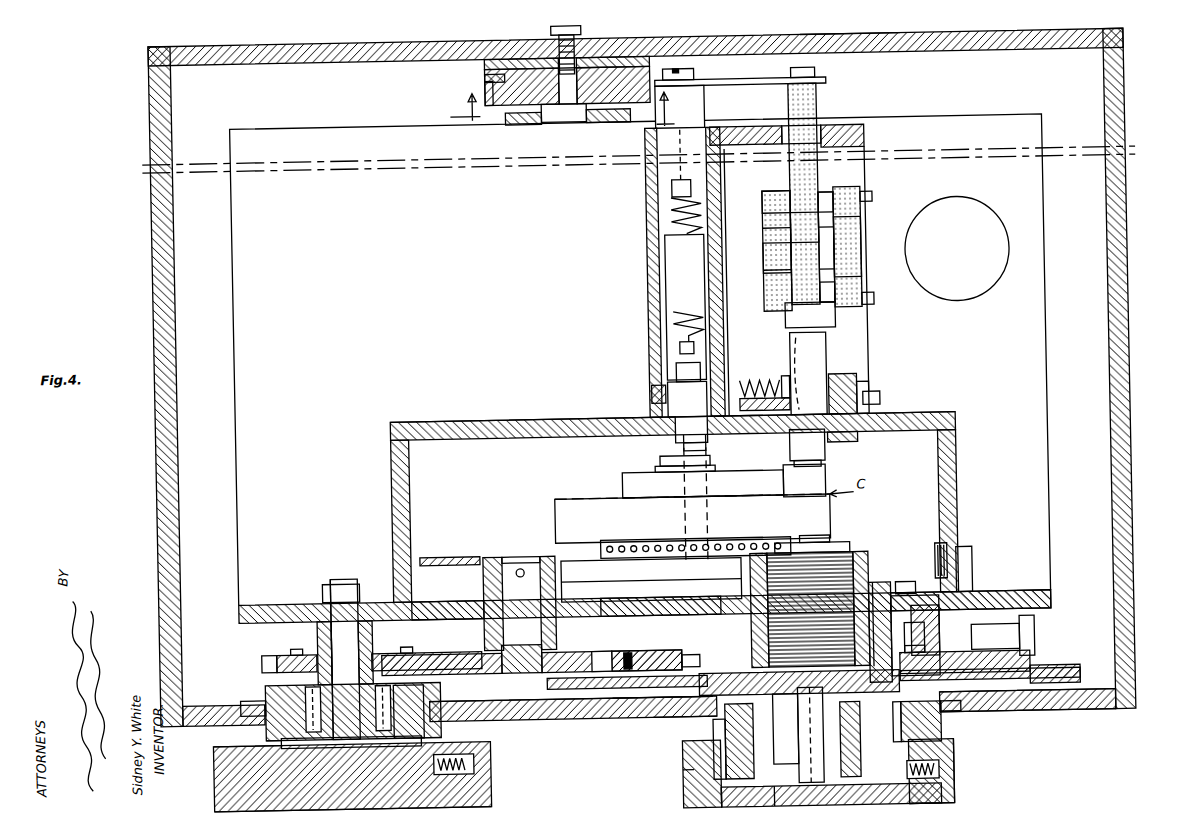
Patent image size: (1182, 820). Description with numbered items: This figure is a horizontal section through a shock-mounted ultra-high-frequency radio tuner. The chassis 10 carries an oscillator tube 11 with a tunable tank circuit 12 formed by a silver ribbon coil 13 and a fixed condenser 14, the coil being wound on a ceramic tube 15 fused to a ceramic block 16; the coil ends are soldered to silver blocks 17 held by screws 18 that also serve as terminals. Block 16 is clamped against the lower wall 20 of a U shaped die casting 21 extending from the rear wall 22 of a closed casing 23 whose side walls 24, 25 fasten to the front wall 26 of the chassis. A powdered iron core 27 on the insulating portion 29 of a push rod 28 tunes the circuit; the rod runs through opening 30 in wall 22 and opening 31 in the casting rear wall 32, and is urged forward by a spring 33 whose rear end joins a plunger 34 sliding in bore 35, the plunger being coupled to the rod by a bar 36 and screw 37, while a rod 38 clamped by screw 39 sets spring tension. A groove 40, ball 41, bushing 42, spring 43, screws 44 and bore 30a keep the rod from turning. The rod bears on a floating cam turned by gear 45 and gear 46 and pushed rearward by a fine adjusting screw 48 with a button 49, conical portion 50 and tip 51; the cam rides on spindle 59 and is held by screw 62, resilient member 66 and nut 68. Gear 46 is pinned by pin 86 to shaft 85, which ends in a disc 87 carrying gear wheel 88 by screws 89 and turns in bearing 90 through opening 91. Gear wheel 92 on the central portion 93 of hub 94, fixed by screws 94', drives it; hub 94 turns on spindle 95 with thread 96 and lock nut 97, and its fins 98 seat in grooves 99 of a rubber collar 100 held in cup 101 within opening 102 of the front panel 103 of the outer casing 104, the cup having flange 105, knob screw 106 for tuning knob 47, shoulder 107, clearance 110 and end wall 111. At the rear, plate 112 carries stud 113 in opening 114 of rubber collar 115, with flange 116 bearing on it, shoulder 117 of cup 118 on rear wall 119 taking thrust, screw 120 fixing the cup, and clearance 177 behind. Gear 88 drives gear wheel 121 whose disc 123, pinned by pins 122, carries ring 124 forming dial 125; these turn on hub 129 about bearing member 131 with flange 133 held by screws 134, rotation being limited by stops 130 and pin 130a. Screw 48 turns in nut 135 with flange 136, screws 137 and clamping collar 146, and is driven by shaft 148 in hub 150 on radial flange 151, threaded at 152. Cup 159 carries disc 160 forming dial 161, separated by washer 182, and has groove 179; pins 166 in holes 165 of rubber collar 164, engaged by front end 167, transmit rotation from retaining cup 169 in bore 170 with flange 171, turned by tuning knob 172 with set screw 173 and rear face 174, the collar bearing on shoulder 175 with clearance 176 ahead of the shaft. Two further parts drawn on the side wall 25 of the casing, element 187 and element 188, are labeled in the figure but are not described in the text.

The chassis 10 is at (226, 354).
The oscillator tube 11 is at (970, 304).
The tunable tank circuit 12 is at (870, 262).
The coil 13 is at (776, 274).
The condenser 14 is at (786, 250).
The cylindrical tube 15 is at (761, 224).
The rectangular block 16 is at (846, 289).
The silver blocks 17 is at (819, 215).
The screws 18 is at (890, 310).
The lower wall 20 is at (860, 372).
The die casting 21 is at (645, 306).
The rear wall 22 is at (498, 429).
The closed casing 23 is at (431, 416).
The side wall 24 is at (384, 470).
The side wall 25 is at (950, 484).
The front wall 26 is at (231, 614).
The powdered iron core 27 is at (777, 334).
The push rod 28 is at (807, 457).
The insulation portion 29 is at (787, 190).
The opening 30 is at (824, 449).
The bore 30a is at (816, 383).
The opening 31 is at (788, 142).
The rear wall 32 is at (838, 143).
The spring 33 is at (677, 226).
The plunger 34 is at (701, 129).
The cylindrical bore 35 is at (669, 208).
The bar 36 is at (741, 96).
The screw 37 is at (696, 87).
The rod 38 is at (666, 390).
The screw 39 is at (641, 412).
The groove 40 is at (786, 367).
The ball 41 is at (764, 397).
The bushing 42 is at (849, 408).
The spring 43 is at (739, 397).
The screws 44 is at (865, 422).
The gear 45 is at (610, 578).
The gear 46 is at (415, 565).
The tuning knob 47 is at (464, 807).
The adjusting screw 48 is at (768, 558).
The button 49 is at (820, 567).
The conical intermediate portion 50 is at (808, 555).
The tip 51 is at (792, 555).
The spindle 59 is at (687, 465).
The threaded screw 62 is at (652, 477).
The resilient member 66 is at (690, 553).
The nut 68 is at (730, 491).
The shaft 85 is at (538, 570).
The pin 86 is at (490, 569).
The disc 87 is at (488, 674).
The gear wheel 88 is at (600, 669).
The screws 89 is at (459, 664).
The tubular bearing 90 is at (575, 593).
The opening 91 is at (459, 616).
The gear wheel 92 is at (250, 666).
The enlarged central portion 93 is at (374, 663).
The hollow supporting hub 94 is at (328, 653).
The screws 94' is at (345, 641).
The spindle 95 is at (344, 602).
The threaded portion 96 is at (330, 588).
The lock nut 97 is at (313, 597).
The fins 98 is at (300, 704).
The grooves 99 is at (332, 749).
The rubber supporting collar 100 is at (256, 692).
The supporting cup 101 is at (226, 792).
The circular opening 102 is at (227, 708).
The front panel 103 is at (577, 733).
The closed casing 104 is at (133, 460).
The flange 105 is at (403, 705).
The threaded screw 106 is at (456, 775).
The reduced shoulder portion 107 is at (237, 744).
The clearance space 110 is at (345, 739).
The interior end wall 111 is at (231, 762).
The plate 112 is at (518, 129).
The stud 113 is at (561, 123).
The central opening 114 is at (578, 73).
The rubber supporting collar 115 is at (620, 79).
The flange portion 116 is at (599, 131).
The shoulder 117 is at (484, 86).
The supporting cup 118 is at (483, 95).
The rear vertical wall 119 is at (810, 52).
The threaded screw 120 is at (551, 39).
The gear wheel 121 is at (619, 667).
The pins 122 is at (979, 676).
The metallic disc 123 is at (536, 690).
The Bakelite ring 124 is at (492, 727).
The graduated dial 125 is at (1048, 708).
The hub 129 is at (678, 675).
The stops 130 is at (1019, 657).
The pin 130a is at (969, 648).
The outboard bearing member 131 is at (904, 663).
The flange 133 is at (895, 605).
The screws 134 is at (938, 604).
The supporting nut 135 is at (860, 594).
The flange 136 is at (902, 610).
The securing screws 137 is at (878, 600).
The clamping collar 146 is at (848, 589).
The shaft 148 is at (826, 803).
The hub 150 is at (812, 717).
The radial flange 151 is at (828, 685).
The threaded portion 152 is at (901, 655).
The cup member 159 is at (895, 737).
The circular disc 160 is at (977, 721).
The graduated dial 161 is at (1007, 717).
The rubber supporting collar 164 is at (937, 756).
The holes 165 is at (716, 801).
The pins 166 is at (697, 760).
The front end 167 is at (672, 750).
The retaining cup 169 is at (941, 811).
The bore 170 is at (922, 730).
The flange 171 is at (637, 734).
The tuning knob 172 is at (932, 761).
The set screw 173 is at (926, 786).
The rear face 174 is at (677, 725).
The shoulder 175 is at (656, 785).
The clearance space 176 is at (766, 802).
The clearance space 177 is at (547, 80).
The circular groove 179 is at (912, 715).
The washer 182 is at (823, 703).
The block 187 is at (951, 546).
The block 188 is at (921, 535).